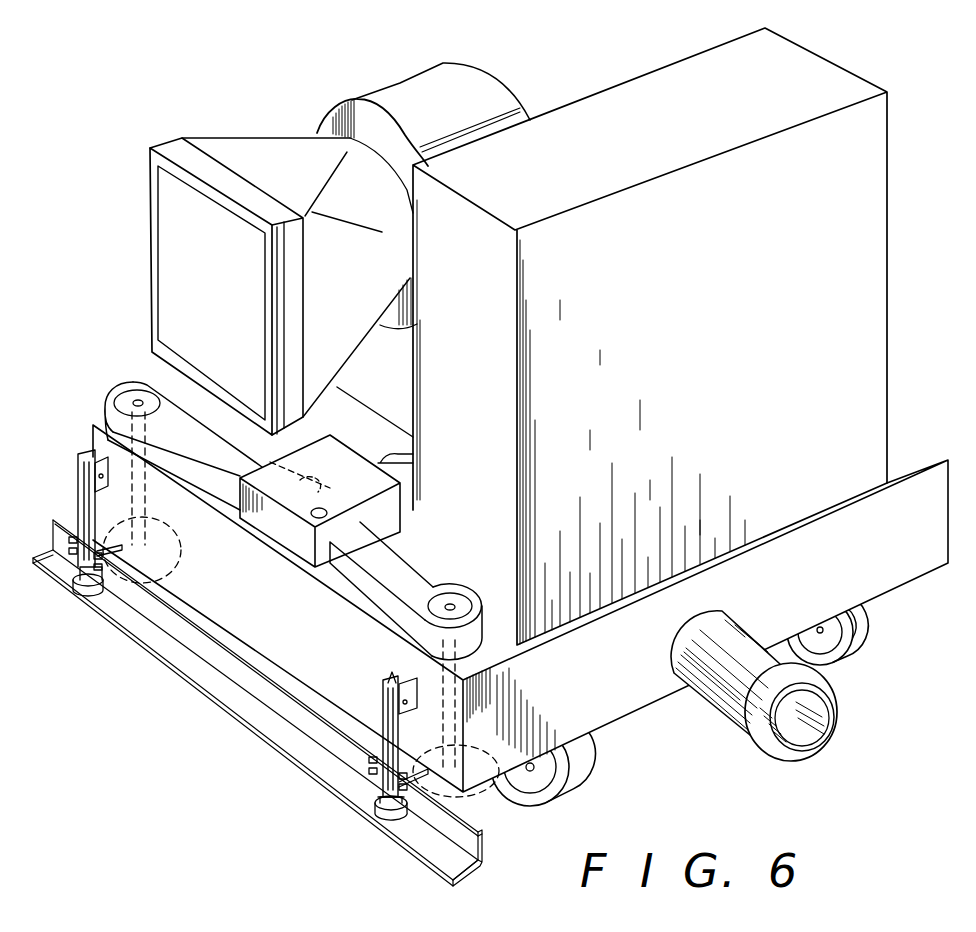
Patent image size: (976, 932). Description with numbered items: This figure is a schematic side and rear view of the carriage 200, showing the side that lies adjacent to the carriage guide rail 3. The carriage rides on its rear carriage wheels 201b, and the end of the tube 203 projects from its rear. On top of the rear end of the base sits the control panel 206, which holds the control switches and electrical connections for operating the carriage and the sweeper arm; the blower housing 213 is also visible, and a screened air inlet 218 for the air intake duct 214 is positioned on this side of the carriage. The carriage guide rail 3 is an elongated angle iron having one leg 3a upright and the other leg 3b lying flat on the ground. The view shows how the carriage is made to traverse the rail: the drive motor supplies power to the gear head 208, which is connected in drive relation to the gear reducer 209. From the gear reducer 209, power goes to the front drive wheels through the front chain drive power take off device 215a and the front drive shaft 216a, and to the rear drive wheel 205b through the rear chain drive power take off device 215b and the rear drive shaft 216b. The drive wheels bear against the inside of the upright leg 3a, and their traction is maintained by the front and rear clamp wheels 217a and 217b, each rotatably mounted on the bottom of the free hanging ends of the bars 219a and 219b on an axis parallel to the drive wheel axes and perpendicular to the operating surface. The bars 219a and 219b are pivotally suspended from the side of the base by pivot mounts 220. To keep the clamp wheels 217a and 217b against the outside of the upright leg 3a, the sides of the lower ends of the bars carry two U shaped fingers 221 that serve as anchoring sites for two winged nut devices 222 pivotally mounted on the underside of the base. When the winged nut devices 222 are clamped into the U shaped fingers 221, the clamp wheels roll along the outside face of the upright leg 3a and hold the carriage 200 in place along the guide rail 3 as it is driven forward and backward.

The carriage 200 is at (923, 558).
The control panel 206 is at (816, 67).
The blower housing 213 is at (470, 78).
The air intake duct 214 is at (232, 142).
The screened air inlet 218 is at (199, 239).
The front chain drive power take off device 215a is at (217, 446).
The rear chain drive power take off device 215b is at (409, 566).
The front drive shaft 216a is at (137, 401).
The rear drive shaft 216b is at (451, 604).
The gear head 208 is at (401, 465).
The gear reducer 209 is at (368, 483).
The rear drive wheel 205b is at (476, 800).
The front bar 219a is at (82, 462).
The rear bar 219b is at (383, 712).
The pivot mount 220 is at (95, 484).
The U shaped finger 221 is at (112, 565).
The winged nut device 222 is at (73, 547).
The front clamp wheel 217a is at (88, 592).
The rear clamp wheel 217b is at (395, 818).
The carriage guide rail 3 is at (196, 686).
The upright leg 3a is at (483, 866).
The flat leg 3b is at (466, 878).
The tube 203 is at (826, 670).
The rear carriage wheel 201b is at (580, 767).